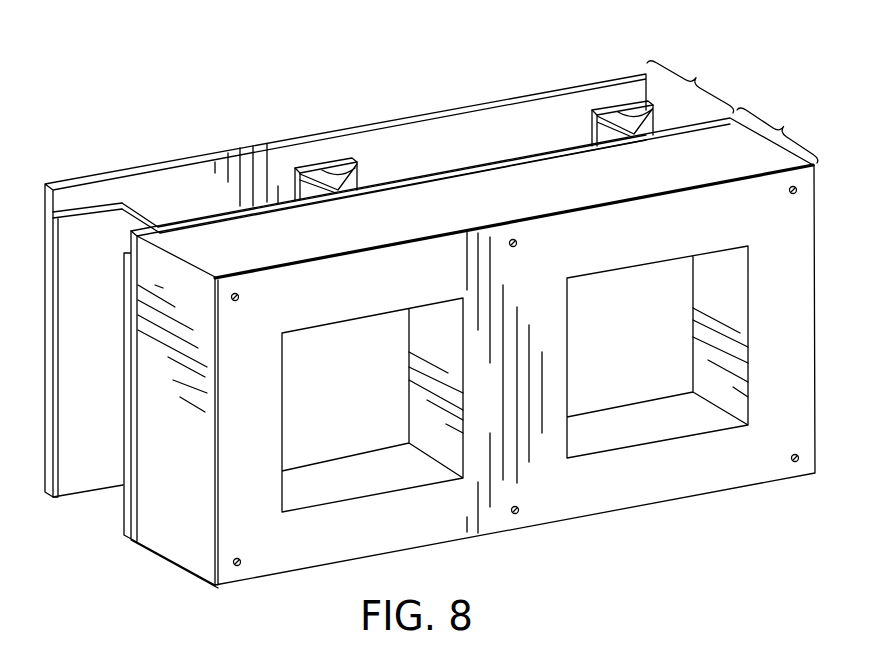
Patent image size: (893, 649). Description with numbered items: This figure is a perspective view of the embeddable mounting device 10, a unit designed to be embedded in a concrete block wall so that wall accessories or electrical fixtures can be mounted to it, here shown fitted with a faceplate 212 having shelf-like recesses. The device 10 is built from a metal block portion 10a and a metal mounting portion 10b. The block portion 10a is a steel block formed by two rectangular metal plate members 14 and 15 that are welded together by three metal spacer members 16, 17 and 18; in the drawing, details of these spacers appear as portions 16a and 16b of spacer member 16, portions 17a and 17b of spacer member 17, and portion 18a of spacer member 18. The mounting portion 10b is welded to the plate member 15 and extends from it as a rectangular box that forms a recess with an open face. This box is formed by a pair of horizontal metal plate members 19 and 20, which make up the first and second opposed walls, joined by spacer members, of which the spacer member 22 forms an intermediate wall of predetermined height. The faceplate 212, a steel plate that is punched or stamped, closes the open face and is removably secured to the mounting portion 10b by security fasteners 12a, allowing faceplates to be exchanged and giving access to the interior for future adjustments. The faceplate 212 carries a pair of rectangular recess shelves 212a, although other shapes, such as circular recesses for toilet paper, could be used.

The embeddable mounting device 10 is at (442, 295).
The metal block portion 10a is at (690, 81).
The metal mounting portion 10b is at (777, 131).
The security fasteners 12a is at (241, 297).
The metal plate member 14 is at (408, 112).
The metal plate member 15 is at (424, 170).
The metal spacer member 16 is at (133, 303).
The angled portion of hook 16a is at (150, 222).
The vertical leg of hook 16b is at (81, 206).
The metal spacer member 17 is at (343, 126).
The clip side wall 17a is at (357, 168).
The clip top wall 17b is at (334, 159).
The metal spacer member 18 is at (625, 74).
The clip top wall 18a is at (654, 115).
The horizontal metal plate member 19 is at (392, 226).
The horizontal metal plate member 20 is at (152, 532).
The metal spacer member 22 is at (150, 393).
The faceplate 212 is at (815, 335).
The recess shelves 212a is at (370, 480).